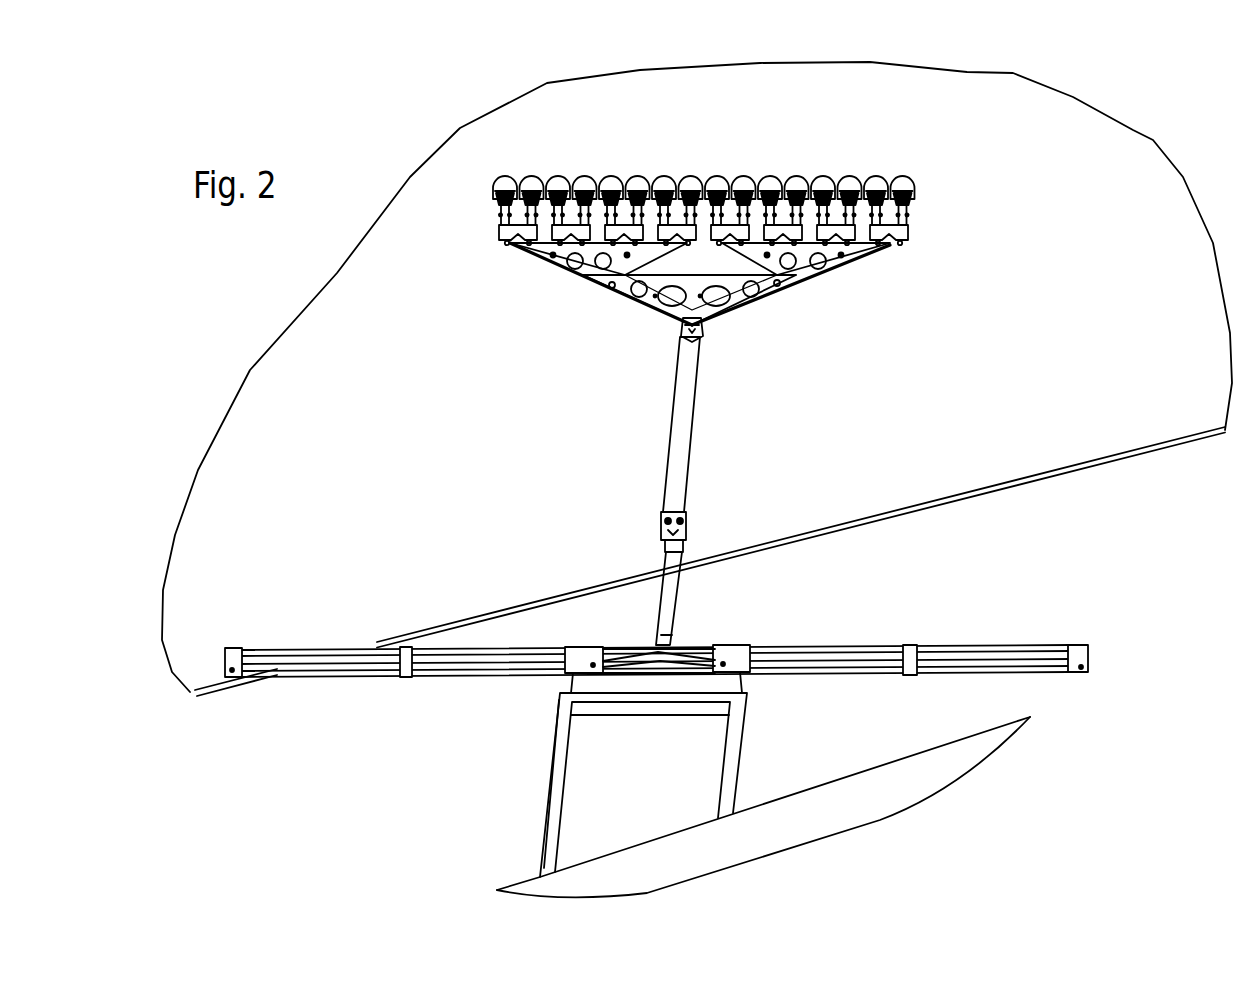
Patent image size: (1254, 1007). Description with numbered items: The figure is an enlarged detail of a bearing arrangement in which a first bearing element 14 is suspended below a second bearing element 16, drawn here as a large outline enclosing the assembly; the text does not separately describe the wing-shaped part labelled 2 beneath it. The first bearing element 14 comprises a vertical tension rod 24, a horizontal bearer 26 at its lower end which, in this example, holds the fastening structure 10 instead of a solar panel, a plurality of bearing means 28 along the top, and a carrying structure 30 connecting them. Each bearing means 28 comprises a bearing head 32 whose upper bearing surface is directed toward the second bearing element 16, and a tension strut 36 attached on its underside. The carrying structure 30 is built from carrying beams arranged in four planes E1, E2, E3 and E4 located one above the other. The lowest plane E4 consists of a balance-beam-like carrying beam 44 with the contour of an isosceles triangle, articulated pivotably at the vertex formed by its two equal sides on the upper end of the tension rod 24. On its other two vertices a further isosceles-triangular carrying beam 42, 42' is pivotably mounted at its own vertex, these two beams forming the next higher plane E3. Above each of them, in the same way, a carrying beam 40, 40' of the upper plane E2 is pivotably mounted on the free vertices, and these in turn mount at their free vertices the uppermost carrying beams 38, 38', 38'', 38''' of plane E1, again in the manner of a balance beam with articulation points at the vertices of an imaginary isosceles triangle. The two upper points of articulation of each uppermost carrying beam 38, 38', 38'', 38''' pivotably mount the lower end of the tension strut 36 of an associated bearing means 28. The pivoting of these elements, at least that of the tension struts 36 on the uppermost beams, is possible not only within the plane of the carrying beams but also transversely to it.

The wing 2 is at (968, 784).
The fastening structure 10 is at (553, 778).
The first bearing element 14 is at (729, 336).
The second bearing element 16 is at (1150, 198).
The tension rod 24 is at (670, 465).
The horizontal bearer 26 is at (810, 641).
The bearing means 28 is at (643, 171).
The carrying structure 30 is at (589, 293).
The bearing head 32 is at (533, 177).
The tension strut 36 is at (500, 240).
The carrying beam 38 is at (747, 167).
The carrying beam 38' is at (803, 167).
The carrying beam 38'' is at (859, 167).
The carrying beam 38''' is at (916, 167).
The carrying beam 40 is at (619, 261).
The carrying beam 40' is at (833, 298).
The carrying beam 42 is at (791, 306).
The carrying beam 42' is at (581, 284).
The carrying beam 44 is at (745, 300).
The plane E1 is at (916, 229).
The plane E2 is at (900, 251).
The plane E3 is at (855, 276).
The plane E4 is at (784, 306).